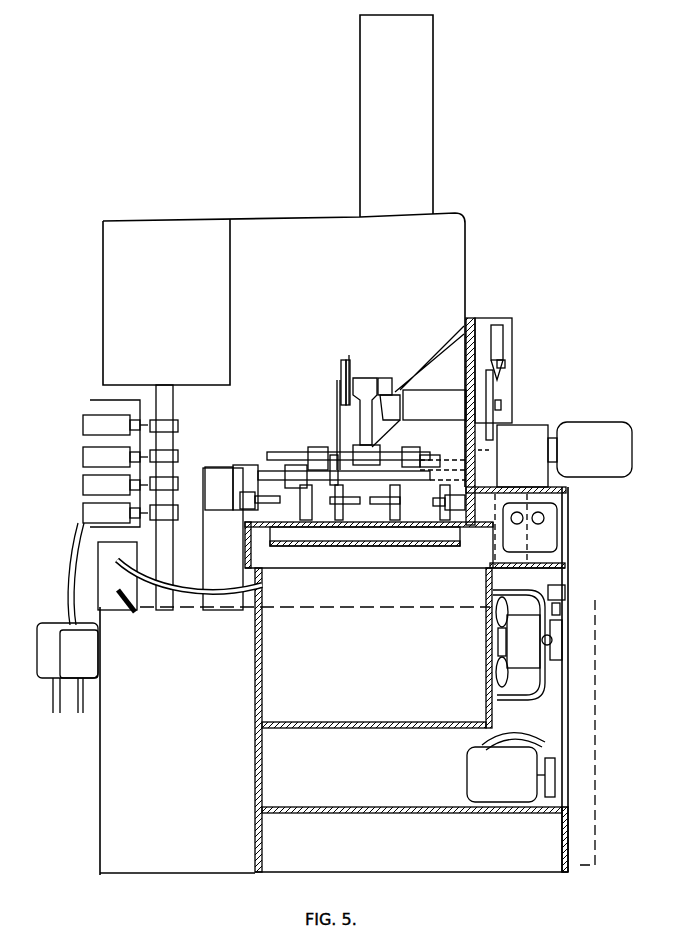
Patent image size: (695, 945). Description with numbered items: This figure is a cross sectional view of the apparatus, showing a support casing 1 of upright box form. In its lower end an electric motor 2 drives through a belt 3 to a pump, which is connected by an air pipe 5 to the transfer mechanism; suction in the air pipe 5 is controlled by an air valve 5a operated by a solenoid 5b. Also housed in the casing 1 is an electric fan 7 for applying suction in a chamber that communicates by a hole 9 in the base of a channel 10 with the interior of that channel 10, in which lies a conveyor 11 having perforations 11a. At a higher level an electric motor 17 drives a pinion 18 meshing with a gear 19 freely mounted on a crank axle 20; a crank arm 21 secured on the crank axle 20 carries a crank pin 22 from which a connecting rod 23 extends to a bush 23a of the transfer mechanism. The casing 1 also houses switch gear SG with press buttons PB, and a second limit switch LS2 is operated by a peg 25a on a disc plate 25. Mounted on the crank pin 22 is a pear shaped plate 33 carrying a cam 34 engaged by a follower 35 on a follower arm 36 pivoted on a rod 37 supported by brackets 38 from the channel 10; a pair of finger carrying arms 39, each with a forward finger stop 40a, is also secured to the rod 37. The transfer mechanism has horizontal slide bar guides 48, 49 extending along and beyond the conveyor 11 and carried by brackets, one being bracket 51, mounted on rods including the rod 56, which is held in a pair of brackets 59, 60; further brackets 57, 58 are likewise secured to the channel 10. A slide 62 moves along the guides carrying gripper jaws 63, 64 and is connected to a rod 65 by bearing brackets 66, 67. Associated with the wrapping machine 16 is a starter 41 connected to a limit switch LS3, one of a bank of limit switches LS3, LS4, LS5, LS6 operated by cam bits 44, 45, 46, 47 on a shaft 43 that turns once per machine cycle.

The support casing 1 is at (568, 737).
The electric motor 2 is at (510, 767).
The belt 3 is at (555, 790).
The air pipe 5 is at (552, 645).
The air valve 5a is at (562, 635).
The solenoid 5b is at (565, 593).
The electric fan 7 is at (505, 685).
The hole 9 is at (368, 568).
The channel 10 is at (492, 540).
The conveyor 11 is at (450, 528).
The perforations 11a is at (428, 548).
The wrapping machine 16 is at (166, 302).
The electric motor 17 is at (625, 477).
The pinion 18 is at (480, 454).
The gear 19 is at (480, 437).
The crank axle 20 is at (503, 406).
The crank arm 21 is at (402, 398).
The crank pin 22 is at (388, 378).
The connecting rod 23 is at (368, 378).
The bush 23a is at (419, 418).
The disc plate 25 is at (493, 402).
The peg 25a is at (505, 390).
The pear shaped plate 33 is at (349, 355).
The cam 34 is at (343, 360).
The follower 35 is at (340, 385).
The follower arm 36 is at (337, 420).
The rod 37 is at (378, 482).
The brackets 38 is at (577, 500).
The finger carrying arms 39 is at (392, 500).
The forward finger stop 40a is at (365, 538).
The starter 41 is at (50, 678).
The shaft 43 is at (175, 405).
The cam bit 44 is at (178, 518).
The cam bit 45 is at (178, 483).
The cam bit 46 is at (178, 456).
The cam bit 47 is at (178, 426).
The slide bar guide 48 is at (447, 535).
The slide bar guide 49 is at (290, 466).
The bracket 51 is at (443, 458).
The rod 56 is at (262, 472).
The bracket 57 is at (572, 490).
The bracket 58 is at (210, 548).
The bracket 59 is at (555, 455).
The bracket 60 is at (240, 490).
The slide 62 is at (275, 492).
The gripper jaw 63 is at (395, 450).
The gripper jaw 64 is at (332, 456).
The rod 65 is at (348, 430).
The bearing bracket 66 is at (318, 450).
The bearing bracket 67 is at (428, 445).
The second limit switch LS2 is at (503, 336).
The limit switch LS3 is at (83, 513).
The limit switch LS4 is at (83, 485).
The limit switch LS5 is at (83, 457).
The limit switch LS6 is at (83, 425).
The press buttons PB is at (540, 518).
The switch gear SG is at (545, 546).